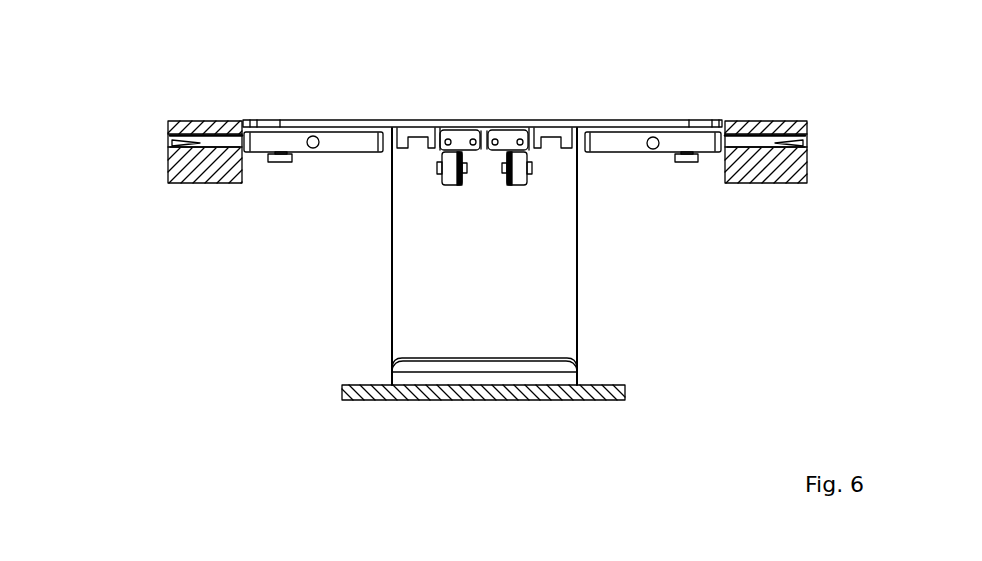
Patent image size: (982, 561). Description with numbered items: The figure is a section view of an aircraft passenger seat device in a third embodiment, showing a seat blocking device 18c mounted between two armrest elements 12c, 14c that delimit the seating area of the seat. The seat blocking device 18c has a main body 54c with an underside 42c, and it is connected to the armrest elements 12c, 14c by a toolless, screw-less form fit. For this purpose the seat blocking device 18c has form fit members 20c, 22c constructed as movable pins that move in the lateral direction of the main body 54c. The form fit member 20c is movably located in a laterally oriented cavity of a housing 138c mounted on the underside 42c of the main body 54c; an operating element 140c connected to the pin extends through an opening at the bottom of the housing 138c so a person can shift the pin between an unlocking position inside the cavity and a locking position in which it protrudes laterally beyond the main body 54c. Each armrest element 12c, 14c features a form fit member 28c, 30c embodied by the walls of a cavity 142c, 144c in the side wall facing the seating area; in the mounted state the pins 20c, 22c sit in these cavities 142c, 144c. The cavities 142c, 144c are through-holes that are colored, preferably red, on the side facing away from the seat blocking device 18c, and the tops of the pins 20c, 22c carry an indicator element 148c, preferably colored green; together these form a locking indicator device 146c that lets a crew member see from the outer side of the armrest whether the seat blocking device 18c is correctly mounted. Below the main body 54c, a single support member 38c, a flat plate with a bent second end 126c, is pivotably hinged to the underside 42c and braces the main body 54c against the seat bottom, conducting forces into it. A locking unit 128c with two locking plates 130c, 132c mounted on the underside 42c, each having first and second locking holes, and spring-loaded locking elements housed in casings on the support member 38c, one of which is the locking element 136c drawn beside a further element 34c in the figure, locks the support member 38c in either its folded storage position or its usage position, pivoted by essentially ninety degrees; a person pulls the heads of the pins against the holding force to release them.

The armrest element 12c is at (168, 130).
The armrest element 14c is at (807, 128).
The seat blocking device 18c is at (482, 113).
The form fit member 20c is at (193, 175).
The form fit member 22c is at (743, 142).
The form fit member 28c is at (162, 143).
The form fit member 30c is at (813, 143).
The left roller 34c is at (440, 172).
The support member 38c is at (492, 332).
The underside 42c is at (623, 132).
The main body 54c is at (517, 127).
The second end 126c is at (388, 370).
The locking unit 128c is at (485, 170).
The locking plate 130c is at (460, 185).
The locking plate 132c is at (505, 185).
The locking element 136c is at (528, 172).
The housing 138c is at (342, 142).
The operating element 140c is at (280, 163).
The cavity 142c is at (228, 128).
The cavity 144c is at (743, 128).
The locking indicator device 146c is at (175, 149).
The indicator element 148c is at (180, 128).